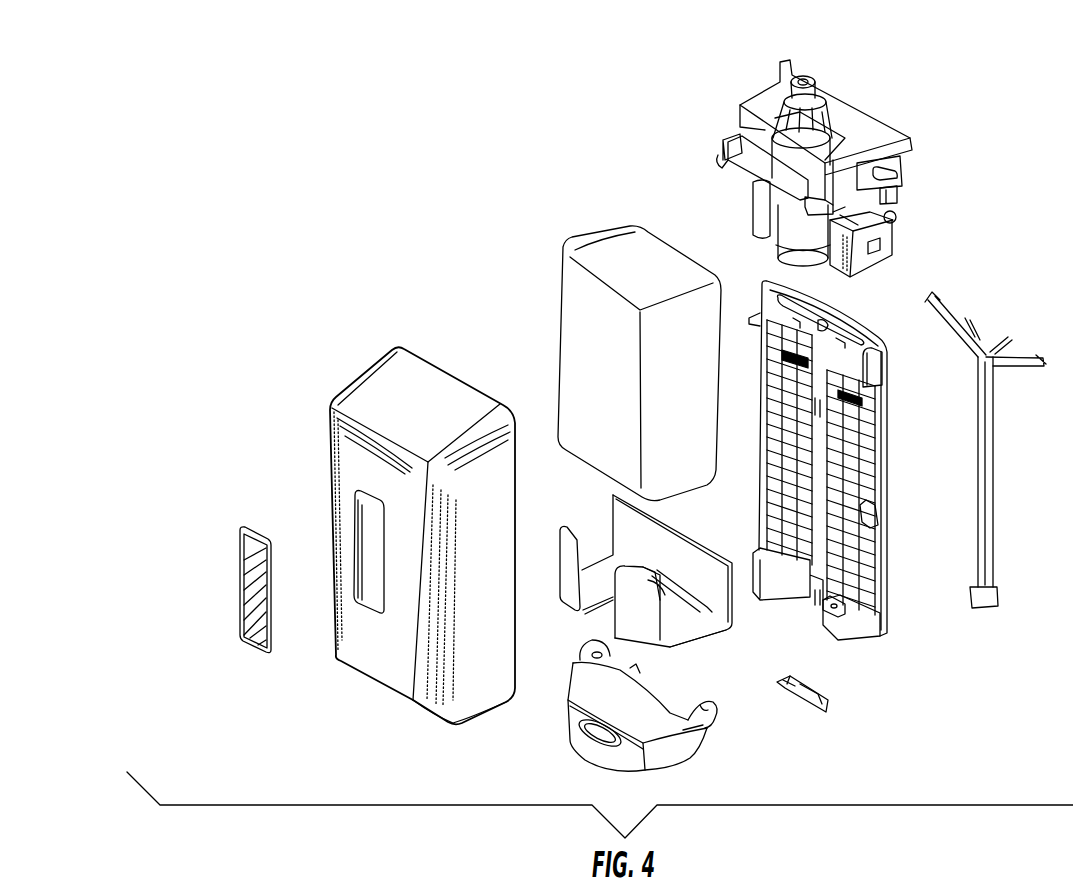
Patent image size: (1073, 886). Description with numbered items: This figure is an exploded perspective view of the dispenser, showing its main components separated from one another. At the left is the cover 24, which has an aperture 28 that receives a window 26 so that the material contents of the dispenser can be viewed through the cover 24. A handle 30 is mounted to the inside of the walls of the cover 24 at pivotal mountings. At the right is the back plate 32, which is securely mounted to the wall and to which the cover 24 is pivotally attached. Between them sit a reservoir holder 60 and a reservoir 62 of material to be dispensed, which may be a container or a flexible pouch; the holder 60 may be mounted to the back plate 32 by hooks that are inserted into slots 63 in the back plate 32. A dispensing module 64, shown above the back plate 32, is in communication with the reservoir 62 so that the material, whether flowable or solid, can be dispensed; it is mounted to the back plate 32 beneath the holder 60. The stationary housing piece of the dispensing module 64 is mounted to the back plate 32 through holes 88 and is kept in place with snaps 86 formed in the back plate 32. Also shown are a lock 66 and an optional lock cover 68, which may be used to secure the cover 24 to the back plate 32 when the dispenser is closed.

The cover 24 is at (340, 445).
The window 26 is at (248, 598).
The aperture 28 is at (365, 538).
The handle 30 is at (597, 737).
The back plate 32 is at (887, 417).
The reservoir holder 60 is at (622, 521).
The reservoir 62 is at (567, 283).
The slots 63 is at (872, 488).
The dispensing module 64 is at (856, 90).
The lock 66 is at (985, 447).
The lock cover 68 is at (830, 700).
The snaps 86 is at (878, 560).
The holes 88 is at (825, 608).